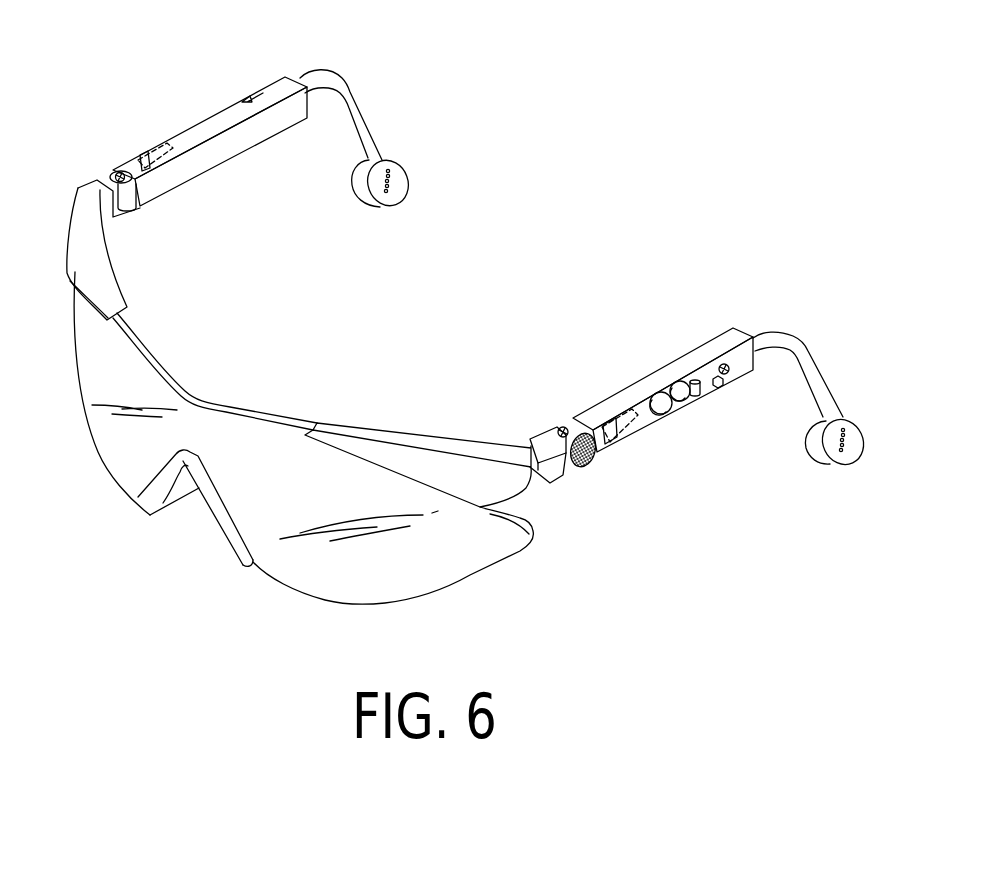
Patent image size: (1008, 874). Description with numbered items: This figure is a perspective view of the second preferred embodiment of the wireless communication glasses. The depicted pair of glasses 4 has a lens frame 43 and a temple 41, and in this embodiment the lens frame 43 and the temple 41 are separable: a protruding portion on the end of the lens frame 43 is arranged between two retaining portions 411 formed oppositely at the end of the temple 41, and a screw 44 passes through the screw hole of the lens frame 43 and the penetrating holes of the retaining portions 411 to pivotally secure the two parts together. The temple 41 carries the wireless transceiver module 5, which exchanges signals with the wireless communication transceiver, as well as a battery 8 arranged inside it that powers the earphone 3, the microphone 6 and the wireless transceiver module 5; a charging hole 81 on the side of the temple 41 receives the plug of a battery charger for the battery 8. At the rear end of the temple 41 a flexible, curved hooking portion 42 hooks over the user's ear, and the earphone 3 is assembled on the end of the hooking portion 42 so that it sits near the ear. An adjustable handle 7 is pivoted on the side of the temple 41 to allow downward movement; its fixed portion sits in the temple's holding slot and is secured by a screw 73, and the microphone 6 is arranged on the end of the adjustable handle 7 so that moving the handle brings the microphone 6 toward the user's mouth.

The earphone 3 is at (398, 178).
The glasses 4 is at (178, 548).
The temple 41 is at (258, 118).
The retaining portions 411 is at (553, 432).
The hooking portion 42 is at (363, 127).
The lens frame 43 is at (227, 428).
The screw 44 is at (565, 427).
The wireless transceiver module 5 is at (150, 147).
The microphone 6 is at (112, 172).
The adjustable handle 7 is at (213, 117).
The screw 73 is at (721, 376).
The battery 8 is at (677, 416).
The charging hole 81 is at (717, 385).